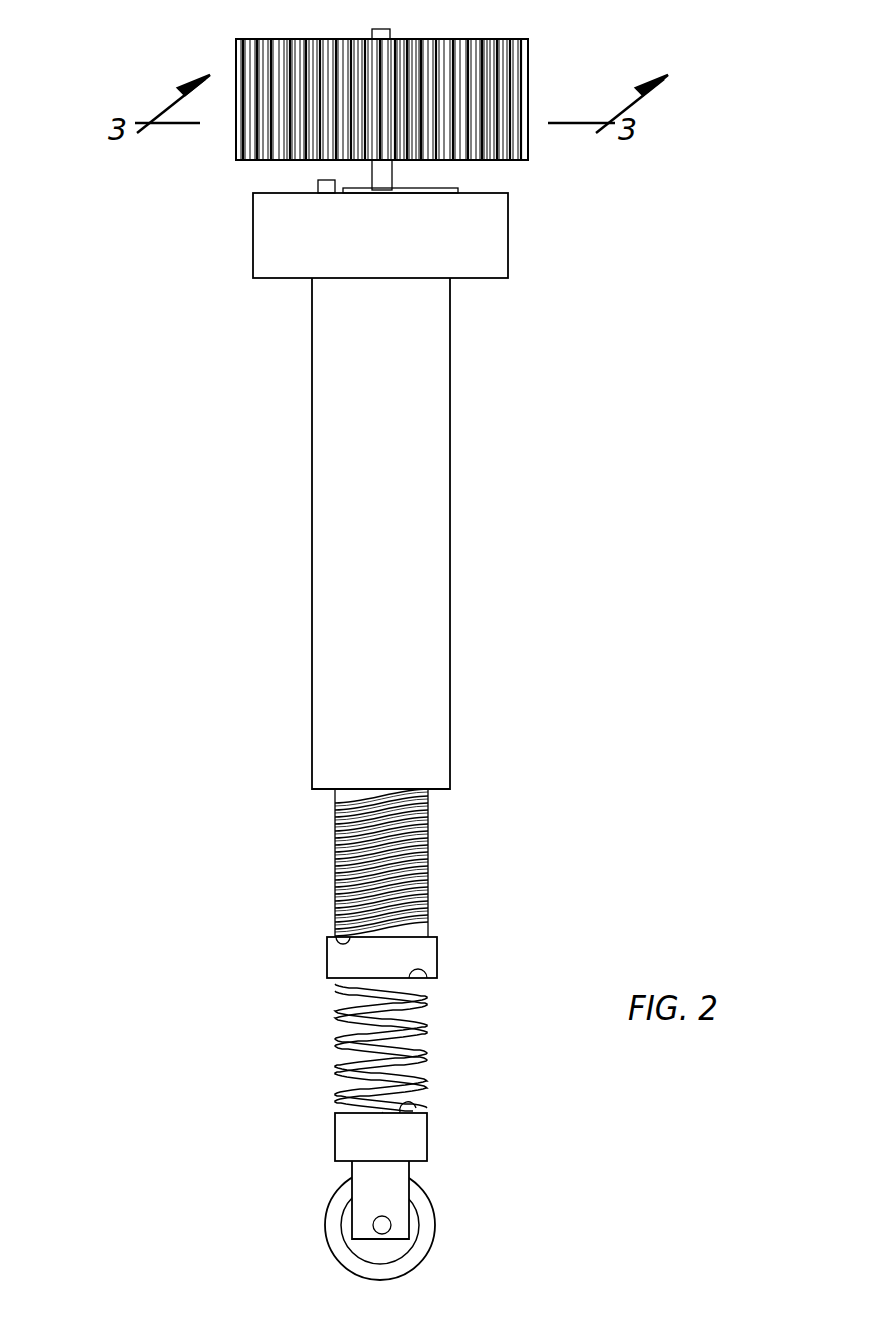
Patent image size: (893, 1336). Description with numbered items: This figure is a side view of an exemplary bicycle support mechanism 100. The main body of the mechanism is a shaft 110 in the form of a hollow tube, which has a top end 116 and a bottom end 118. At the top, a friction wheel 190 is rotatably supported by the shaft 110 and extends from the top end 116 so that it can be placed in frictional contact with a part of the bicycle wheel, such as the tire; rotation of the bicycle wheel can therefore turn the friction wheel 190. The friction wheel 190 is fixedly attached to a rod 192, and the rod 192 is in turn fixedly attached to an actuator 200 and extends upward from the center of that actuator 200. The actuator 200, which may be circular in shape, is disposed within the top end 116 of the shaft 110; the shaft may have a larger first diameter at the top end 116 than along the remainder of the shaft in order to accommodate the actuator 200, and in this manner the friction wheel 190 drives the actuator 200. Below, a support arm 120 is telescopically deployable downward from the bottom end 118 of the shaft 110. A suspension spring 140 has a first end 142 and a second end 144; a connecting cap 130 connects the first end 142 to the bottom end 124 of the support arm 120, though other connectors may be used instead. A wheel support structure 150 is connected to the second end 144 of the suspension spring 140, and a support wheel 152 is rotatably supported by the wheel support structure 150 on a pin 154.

The support mechanism 100 is at (70, 93).
The shaft 110 is at (450, 418).
The top end 116 is at (272, 193).
The bottom end 118 is at (318, 792).
The support arm 120 is at (428, 850).
The bottom end 124 is at (336, 952).
The connecting cap 130 is at (437, 958).
The suspension spring 140 is at (337, 1030).
The first end 142 is at (420, 978).
The second end 144 is at (420, 1097).
The wheel support structure 150 is at (428, 1148).
The support wheel 152 is at (437, 1225).
The axle pin 154 is at (374, 1225).
The friction wheel 190 is at (528, 60).
The rod 192 is at (392, 168).
The actuator 200 is at (203, 250).